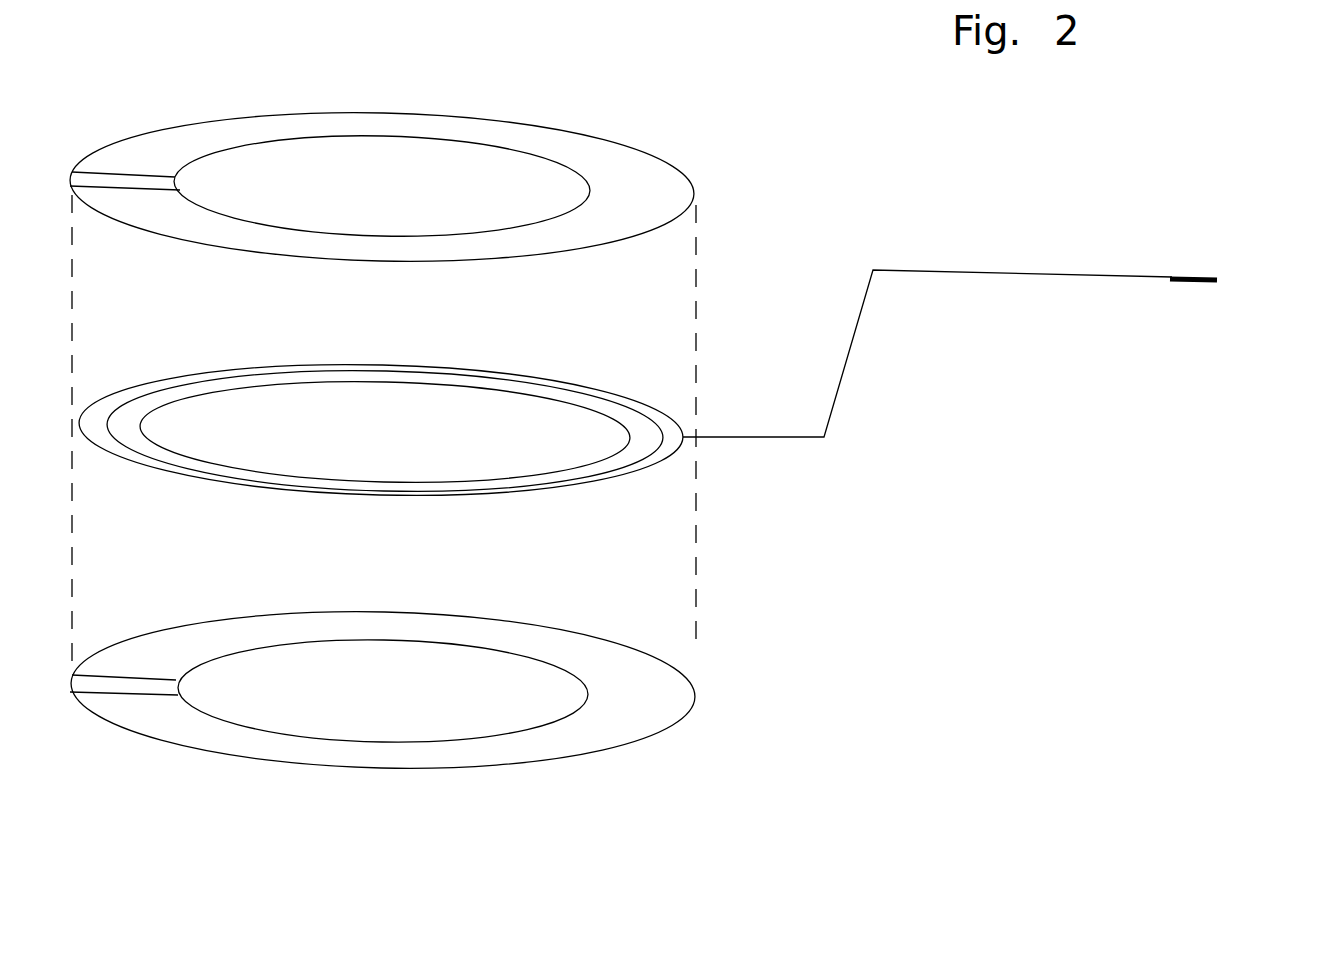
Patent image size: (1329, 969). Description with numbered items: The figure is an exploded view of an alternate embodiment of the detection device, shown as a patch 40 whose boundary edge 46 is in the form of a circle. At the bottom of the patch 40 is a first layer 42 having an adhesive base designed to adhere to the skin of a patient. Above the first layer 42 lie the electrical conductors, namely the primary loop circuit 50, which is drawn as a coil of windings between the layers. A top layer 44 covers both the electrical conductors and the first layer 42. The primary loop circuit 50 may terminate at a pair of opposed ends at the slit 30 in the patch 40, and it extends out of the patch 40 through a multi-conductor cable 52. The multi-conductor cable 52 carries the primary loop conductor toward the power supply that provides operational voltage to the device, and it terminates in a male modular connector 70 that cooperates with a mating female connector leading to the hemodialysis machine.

The slit 30 is at (135, 186).
The patch 40 is at (885, 581).
The first layer 42 is at (495, 752).
The top layer 44 is at (623, 172).
The boundary edge 46 is at (283, 762).
The primary loop circuit 50 is at (185, 455).
The multi-conductor cable 52 is at (973, 270).
The male modular connector 70 is at (1198, 272).